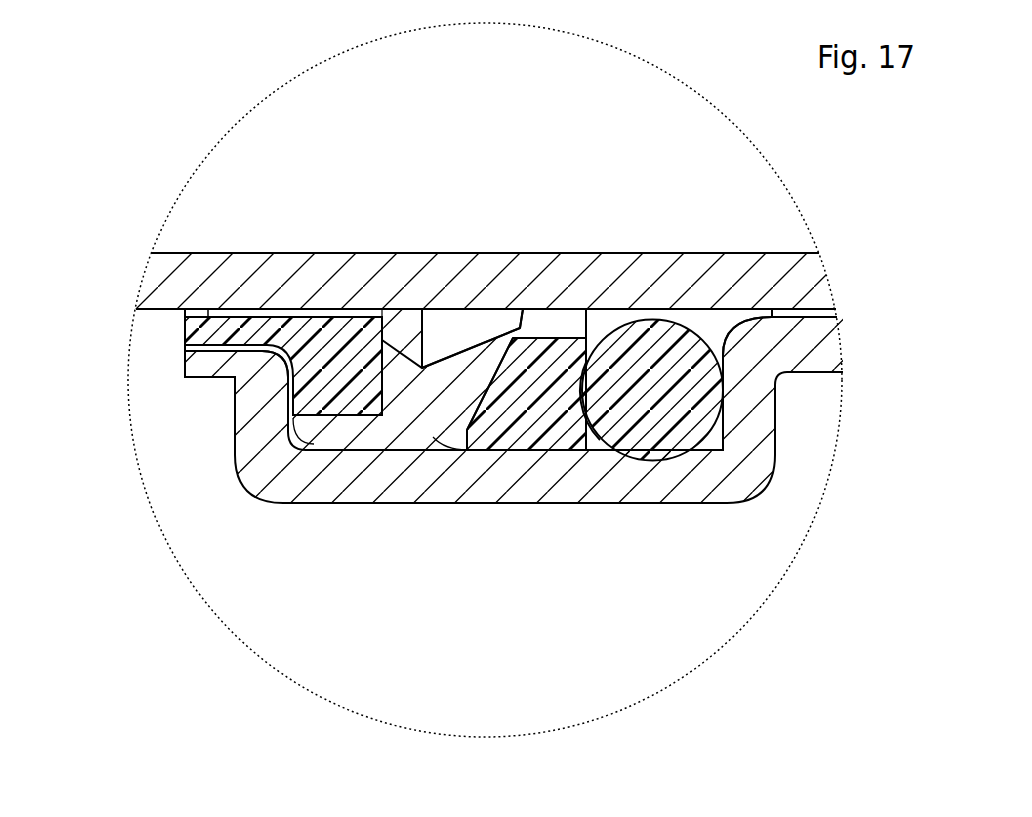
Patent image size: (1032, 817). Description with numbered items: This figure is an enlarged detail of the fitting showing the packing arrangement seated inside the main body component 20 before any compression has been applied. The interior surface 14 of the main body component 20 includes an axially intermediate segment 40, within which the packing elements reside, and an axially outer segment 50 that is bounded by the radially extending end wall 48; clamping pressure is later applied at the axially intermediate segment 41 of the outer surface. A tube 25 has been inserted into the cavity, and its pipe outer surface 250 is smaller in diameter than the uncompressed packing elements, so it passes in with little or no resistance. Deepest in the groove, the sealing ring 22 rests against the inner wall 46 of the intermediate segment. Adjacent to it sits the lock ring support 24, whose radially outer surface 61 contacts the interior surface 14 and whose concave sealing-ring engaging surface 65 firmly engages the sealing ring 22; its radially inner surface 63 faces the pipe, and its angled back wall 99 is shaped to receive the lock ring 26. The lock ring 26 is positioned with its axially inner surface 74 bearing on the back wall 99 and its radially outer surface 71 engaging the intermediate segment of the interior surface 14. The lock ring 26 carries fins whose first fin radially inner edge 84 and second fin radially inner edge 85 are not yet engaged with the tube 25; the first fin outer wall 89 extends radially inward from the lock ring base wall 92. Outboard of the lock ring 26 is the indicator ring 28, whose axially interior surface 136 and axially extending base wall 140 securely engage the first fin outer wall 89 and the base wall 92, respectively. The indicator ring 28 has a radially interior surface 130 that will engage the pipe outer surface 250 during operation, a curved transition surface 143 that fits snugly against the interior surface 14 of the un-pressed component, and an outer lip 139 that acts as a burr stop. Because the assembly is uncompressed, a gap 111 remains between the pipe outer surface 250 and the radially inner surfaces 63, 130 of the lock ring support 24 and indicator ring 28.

The tube 25 is at (210, 253).
The main body component 20 is at (257, 448).
The indicator ring 28 is at (291, 447).
The radially interior surface 130 is at (312, 305).
The interior surface 14 is at (272, 343).
The outer lip 139 is at (190, 322).
The end wall 48 is at (184, 370).
The axially outer segment 50 is at (198, 385).
The transition surface 143 is at (275, 363).
The base wall 92 is at (315, 418).
The axially interior surface 136 is at (380, 355).
The first fin outer wall 89 is at (383, 382).
The base wall 140 is at (372, 422).
The radially outer surface 71 is at (343, 447).
The lock ring 26 is at (433, 420).
The first fin radially inner edge 84 is at (388, 327).
The second fin radially inner edge 85 is at (518, 312).
The gap 111 is at (372, 310).
The radially inner surface 63 is at (547, 312).
The axially inner surface 74 is at (487, 400).
The back wall 99 is at (498, 373).
The lock ring support 24 is at (578, 373).
The radially outer surface 61 is at (557, 458).
The axially intermediate segment 40 is at (595, 458).
The axially intermediate segment 41 is at (620, 505).
The sealing ring 22 is at (657, 352).
The sealing-ring engaging surface 65 is at (580, 407).
The inner wall 46 is at (725, 395).
The pipe outer surface 250 is at (790, 318).